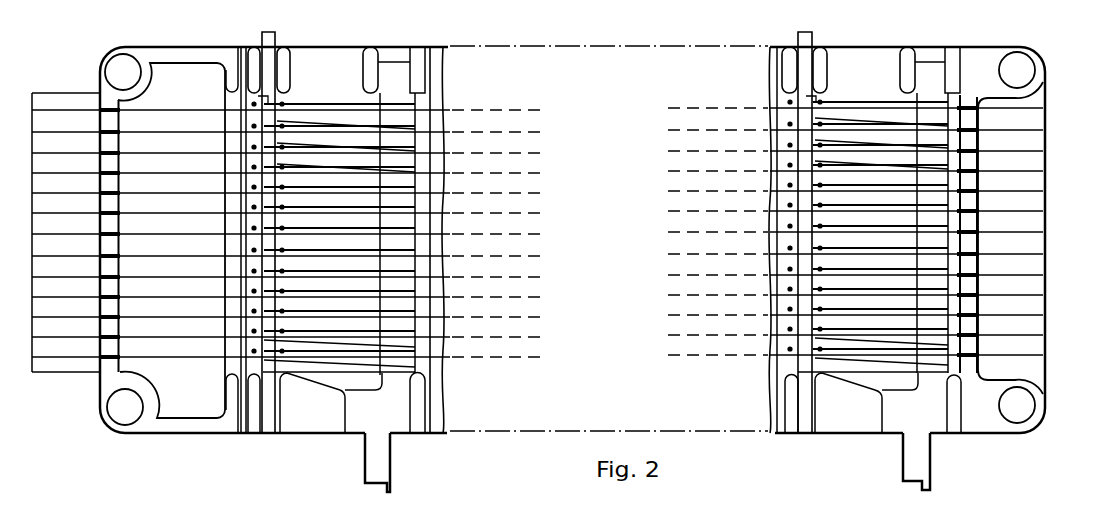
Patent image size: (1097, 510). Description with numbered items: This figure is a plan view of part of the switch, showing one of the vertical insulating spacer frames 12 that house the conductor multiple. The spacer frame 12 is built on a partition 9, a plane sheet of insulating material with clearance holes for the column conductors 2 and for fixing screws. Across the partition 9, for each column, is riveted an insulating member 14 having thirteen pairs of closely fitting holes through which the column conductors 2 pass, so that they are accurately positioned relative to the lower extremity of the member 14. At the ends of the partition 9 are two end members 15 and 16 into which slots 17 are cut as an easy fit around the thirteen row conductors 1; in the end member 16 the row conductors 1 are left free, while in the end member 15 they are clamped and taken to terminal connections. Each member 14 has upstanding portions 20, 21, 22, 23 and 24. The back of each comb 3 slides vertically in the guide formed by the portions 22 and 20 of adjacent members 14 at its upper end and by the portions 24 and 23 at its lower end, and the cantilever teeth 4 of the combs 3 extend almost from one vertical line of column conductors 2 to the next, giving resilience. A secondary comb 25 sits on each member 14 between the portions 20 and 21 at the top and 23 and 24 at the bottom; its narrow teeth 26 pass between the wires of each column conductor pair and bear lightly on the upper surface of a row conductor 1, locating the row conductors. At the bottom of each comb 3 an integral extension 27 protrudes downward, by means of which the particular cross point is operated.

The row conductors 1 is at (449, 130).
The column conductors 2 is at (251, 334).
The comb 3 is at (357, 421).
The teeth 4 is at (328, 144).
The partition 9 is at (436, 48).
The spacer frame 12 is at (91, 399).
The insulating member 14 is at (327, 50).
The end member 15 is at (182, 50).
The end member 16 is at (983, 50).
The slots 17 is at (107, 128).
The upstanding portion 20 is at (251, 50).
The upstanding portion 21 is at (285, 49).
The upstanding portion 22 is at (372, 50).
The upstanding portion 23 is at (247, 435).
The upstanding portion 24 is at (304, 426).
The secondary comb 25 is at (269, 435).
The teeth 26 is at (268, 97).
The integral extension 27 is at (384, 466).